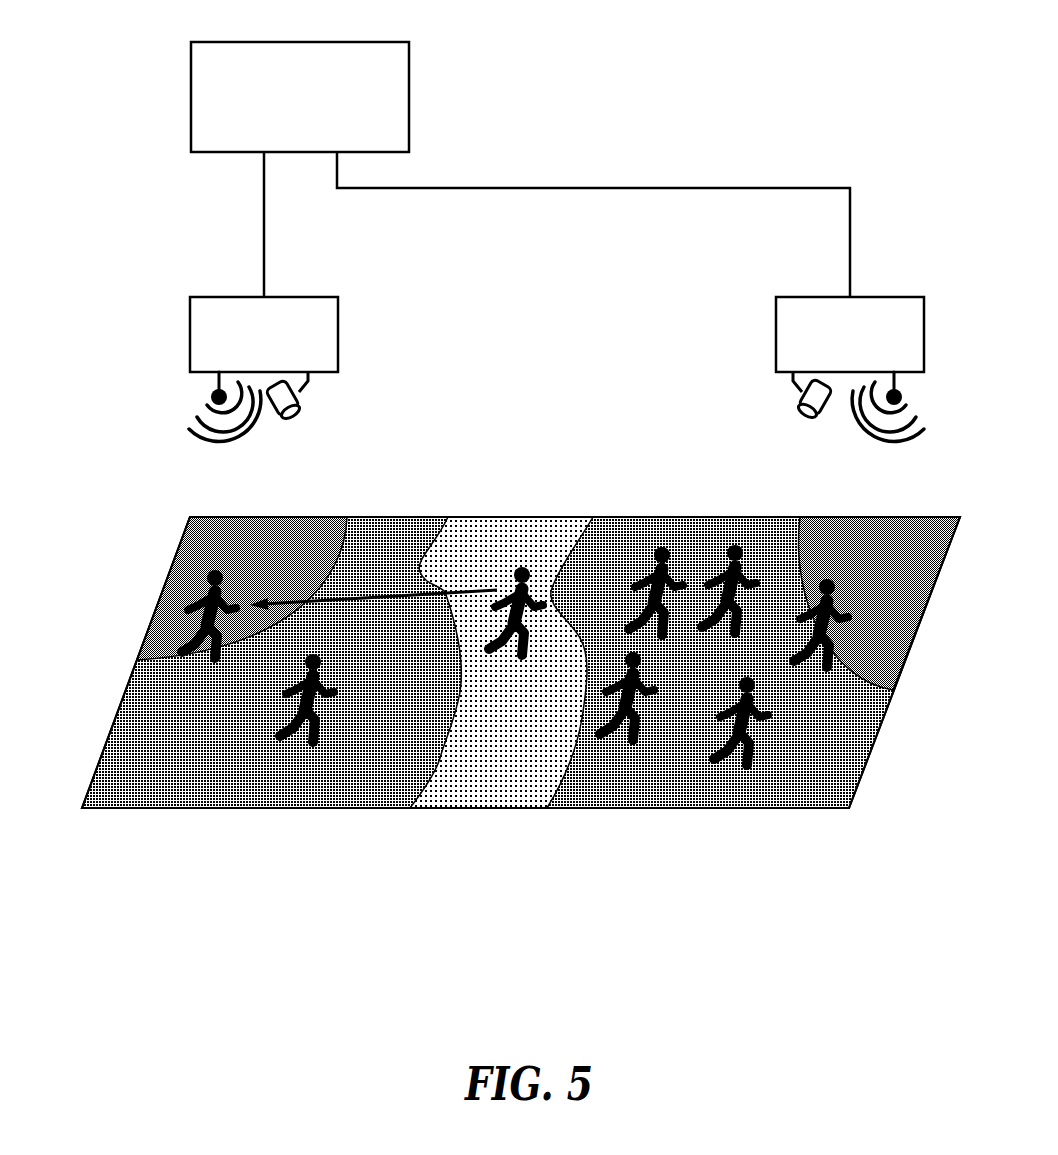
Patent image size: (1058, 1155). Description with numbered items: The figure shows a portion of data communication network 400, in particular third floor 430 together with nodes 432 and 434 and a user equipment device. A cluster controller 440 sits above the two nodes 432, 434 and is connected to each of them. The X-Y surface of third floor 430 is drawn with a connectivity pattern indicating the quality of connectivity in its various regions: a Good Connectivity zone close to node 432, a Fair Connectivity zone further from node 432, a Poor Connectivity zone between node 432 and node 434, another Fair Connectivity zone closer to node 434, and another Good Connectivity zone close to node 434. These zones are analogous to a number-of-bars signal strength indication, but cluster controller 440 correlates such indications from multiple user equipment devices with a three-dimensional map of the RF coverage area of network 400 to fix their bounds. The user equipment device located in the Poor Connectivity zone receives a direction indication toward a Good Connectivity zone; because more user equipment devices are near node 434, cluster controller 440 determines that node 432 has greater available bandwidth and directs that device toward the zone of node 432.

The data communication network 400 is at (80, 1071).
The cluster controller 440 is at (206, 42).
The node 432 is at (206, 298).
The node 434 is at (906, 297).
The third floor 430 is at (485, 797).